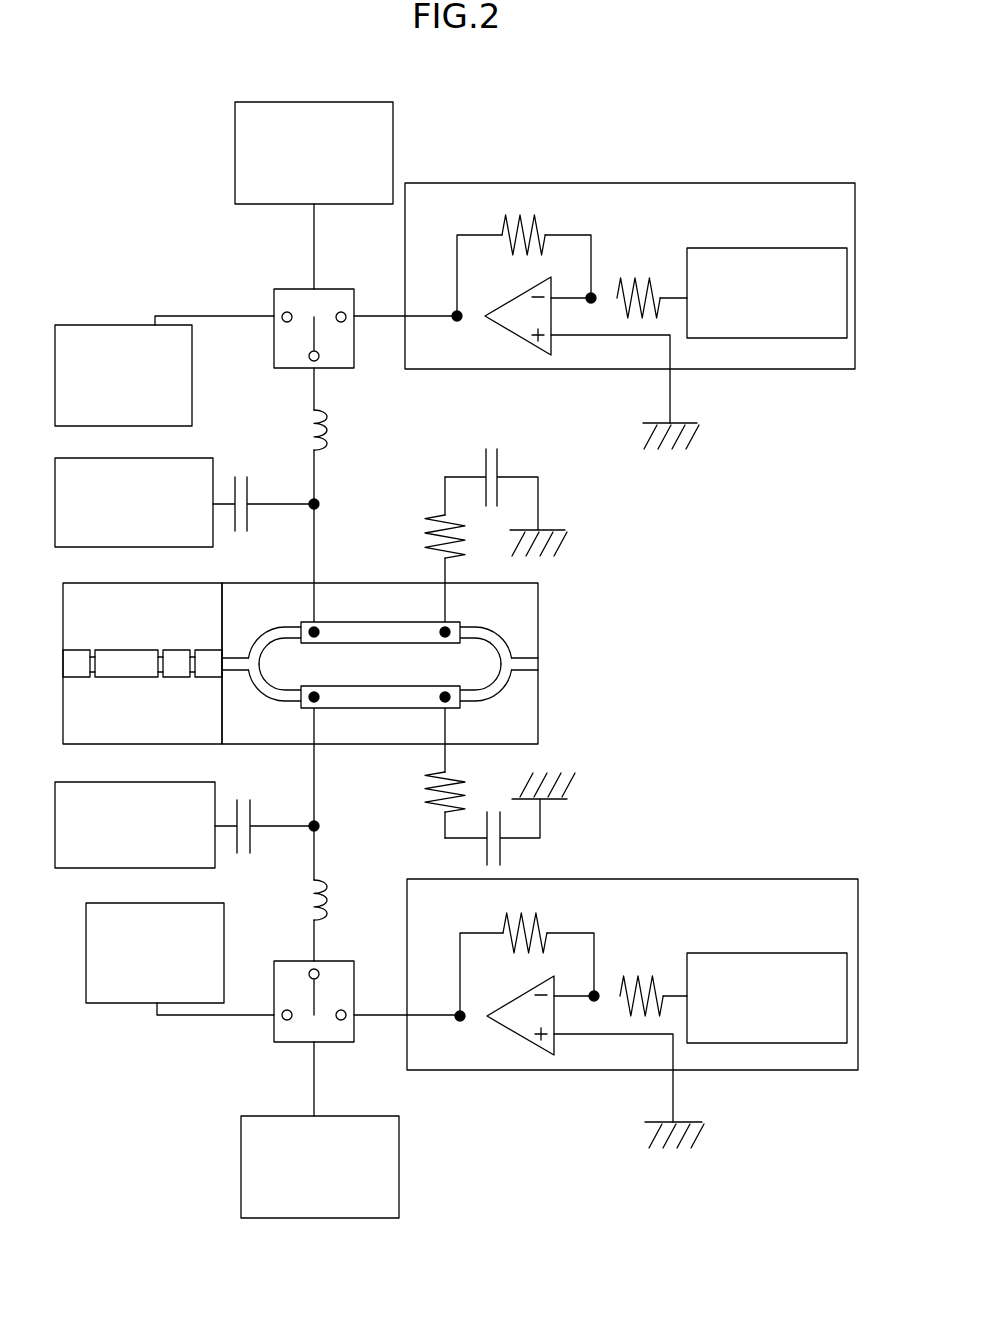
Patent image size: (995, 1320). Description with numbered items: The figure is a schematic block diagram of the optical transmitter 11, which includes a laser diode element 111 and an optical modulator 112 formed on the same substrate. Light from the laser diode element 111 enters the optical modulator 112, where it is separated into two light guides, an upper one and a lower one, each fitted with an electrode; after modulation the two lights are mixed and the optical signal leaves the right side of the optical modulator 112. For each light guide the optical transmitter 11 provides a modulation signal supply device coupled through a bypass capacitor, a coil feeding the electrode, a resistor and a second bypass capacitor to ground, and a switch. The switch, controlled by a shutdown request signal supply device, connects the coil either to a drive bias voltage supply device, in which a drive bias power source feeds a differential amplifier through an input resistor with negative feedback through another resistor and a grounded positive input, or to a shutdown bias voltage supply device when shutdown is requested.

The optical transmitter 11 is at (446, 77).
The laser diode element 111 is at (140, 583).
The optical modulator 112 is at (540, 613).